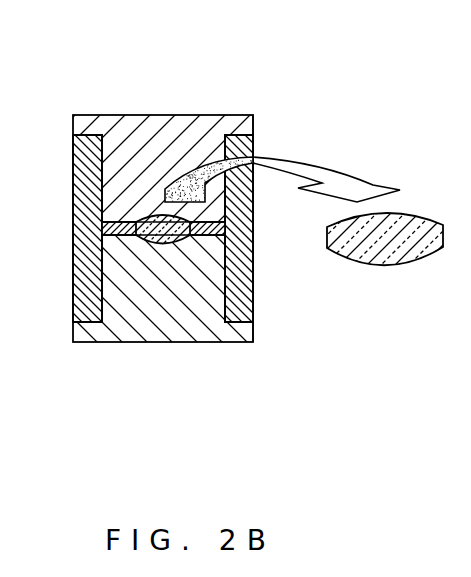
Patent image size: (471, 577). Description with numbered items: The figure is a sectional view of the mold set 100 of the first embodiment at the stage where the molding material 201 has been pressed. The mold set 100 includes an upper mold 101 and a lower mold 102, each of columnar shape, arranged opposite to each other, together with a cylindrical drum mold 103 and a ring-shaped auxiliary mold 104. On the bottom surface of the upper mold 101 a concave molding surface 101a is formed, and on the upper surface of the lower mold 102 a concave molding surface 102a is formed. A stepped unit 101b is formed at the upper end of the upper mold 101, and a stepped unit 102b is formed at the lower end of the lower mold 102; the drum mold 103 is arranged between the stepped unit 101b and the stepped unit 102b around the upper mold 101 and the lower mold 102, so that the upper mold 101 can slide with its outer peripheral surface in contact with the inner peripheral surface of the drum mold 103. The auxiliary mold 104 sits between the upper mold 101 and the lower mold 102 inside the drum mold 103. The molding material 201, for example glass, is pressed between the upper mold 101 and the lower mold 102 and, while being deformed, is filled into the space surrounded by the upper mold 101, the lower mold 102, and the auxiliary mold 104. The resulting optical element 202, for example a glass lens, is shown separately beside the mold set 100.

The mold set 100 is at (140, 185).
The upper mold 101 is at (235, 288).
The molding surface 101a is at (208, 228).
The stepped unit 101b is at (290, 128).
The lower mold 102 is at (235, 288).
The molding surface 102a is at (207, 253).
The stepped unit 102b is at (286, 338).
The drum mold 103 is at (235, 288).
The auxiliary mold 104 is at (228, 288).
The molding material 201 is at (219, 288).
The optical element 202 is at (235, 288).